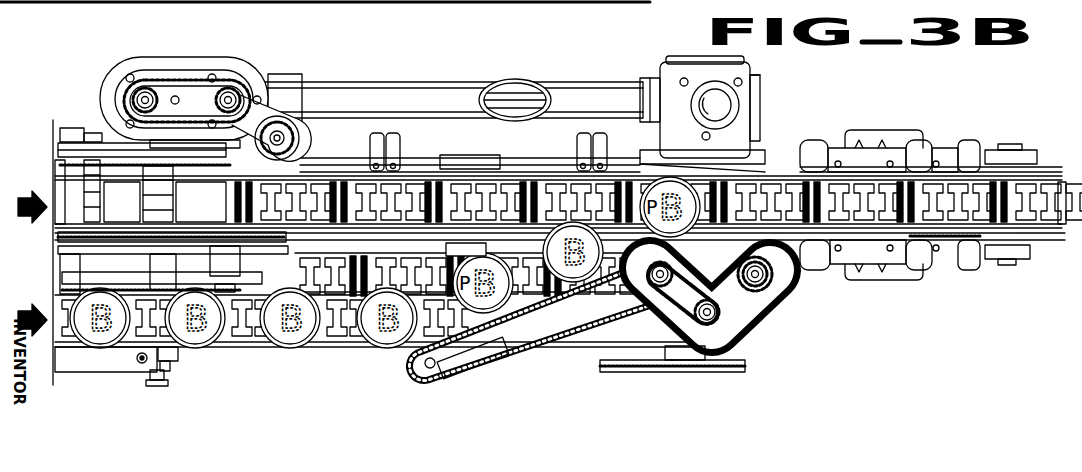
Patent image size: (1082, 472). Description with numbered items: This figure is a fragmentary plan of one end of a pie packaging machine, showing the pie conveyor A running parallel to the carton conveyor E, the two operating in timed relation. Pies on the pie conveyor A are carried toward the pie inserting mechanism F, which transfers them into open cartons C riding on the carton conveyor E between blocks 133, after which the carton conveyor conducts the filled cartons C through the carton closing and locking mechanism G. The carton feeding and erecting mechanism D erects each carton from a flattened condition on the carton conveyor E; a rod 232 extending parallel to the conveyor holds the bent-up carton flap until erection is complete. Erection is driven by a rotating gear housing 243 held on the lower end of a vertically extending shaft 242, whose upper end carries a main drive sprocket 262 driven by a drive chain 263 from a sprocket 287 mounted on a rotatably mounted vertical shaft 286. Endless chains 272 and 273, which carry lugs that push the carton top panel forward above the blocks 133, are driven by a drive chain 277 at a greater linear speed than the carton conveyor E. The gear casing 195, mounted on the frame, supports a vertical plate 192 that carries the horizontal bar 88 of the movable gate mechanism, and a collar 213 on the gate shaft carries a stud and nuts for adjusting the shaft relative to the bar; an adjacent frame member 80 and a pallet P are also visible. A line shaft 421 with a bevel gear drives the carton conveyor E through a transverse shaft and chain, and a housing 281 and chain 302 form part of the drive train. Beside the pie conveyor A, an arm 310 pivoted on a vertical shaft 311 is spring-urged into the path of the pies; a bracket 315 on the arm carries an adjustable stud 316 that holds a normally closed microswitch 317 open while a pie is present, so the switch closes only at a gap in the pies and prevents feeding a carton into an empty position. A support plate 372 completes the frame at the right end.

The support bar 88 is at (58, 150).
The frame side member 80 is at (50, 188).
The collar 213 is at (80, 136).
The rotating gear housing 243 is at (118, 62).
The vertically extending shaft 242 is at (146, 90).
The main drive sprocket 262 is at (158, 86).
The drive chain 263 is at (180, 82).
The sprocket 287 is at (232, 90).
The vertical shaft 286 is at (248, 92).
The gear casing 195 is at (276, 72).
The vertical plate 192 is at (195, 135).
The endless chain 272 is at (145, 189).
The endless chain 273 is at (58, 237).
The rod 232 is at (58, 252).
The drive chain 277 is at (228, 277).
The shaft housing 281 is at (338, 116).
The line shaft 421 is at (507, 98).
The block 133 is at (516, 198).
The drive chain 302 is at (469, 249).
The arm 310 is at (106, 359).
The vertical shaft 311 is at (138, 362).
The bracket 315 is at (152, 376).
The stud 316 is at (160, 383).
The microswitch 317 is at (172, 362).
The support plate 372 is at (915, 258).
The pallet P is at (294, 349).
The pie conveyor A is at (326, 357).
The carton C is at (606, 162).
The carton feeding and erecting mechanism D is at (93, 124).
The carton conveyor E is at (758, 166).
The pie inserting mechanism F is at (766, 324).
The carton closing and locking mechanism G is at (950, 140).